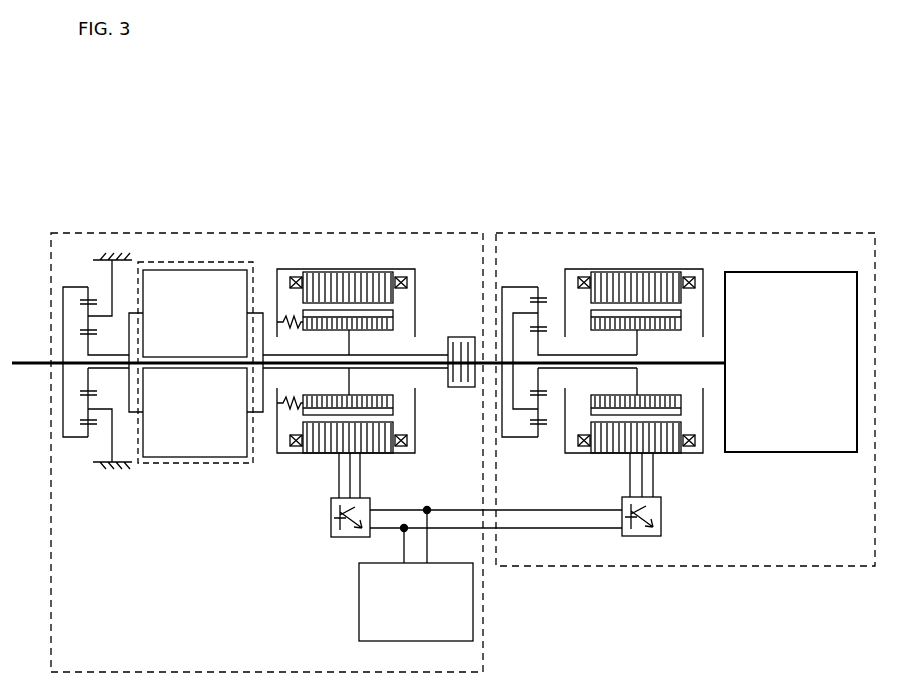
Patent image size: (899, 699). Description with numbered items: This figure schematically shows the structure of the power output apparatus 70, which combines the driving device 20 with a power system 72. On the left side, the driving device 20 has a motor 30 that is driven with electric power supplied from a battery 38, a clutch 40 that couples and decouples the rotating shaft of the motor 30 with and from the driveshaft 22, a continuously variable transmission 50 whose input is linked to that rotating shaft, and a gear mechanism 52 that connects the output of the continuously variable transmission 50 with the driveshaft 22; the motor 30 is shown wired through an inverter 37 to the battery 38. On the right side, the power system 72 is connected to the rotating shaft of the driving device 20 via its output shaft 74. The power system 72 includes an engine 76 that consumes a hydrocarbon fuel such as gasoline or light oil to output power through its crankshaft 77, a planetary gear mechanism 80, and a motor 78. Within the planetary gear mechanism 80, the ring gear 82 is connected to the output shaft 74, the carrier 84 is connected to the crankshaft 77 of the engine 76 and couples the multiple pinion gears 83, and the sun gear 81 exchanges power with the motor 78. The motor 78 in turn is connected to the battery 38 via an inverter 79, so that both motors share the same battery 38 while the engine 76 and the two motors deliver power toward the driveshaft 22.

The driving device 20 is at (267, 232).
The driveshaft 22 is at (33, 360).
The motor 30 is at (343, 269).
The inverter 37 is at (370, 503).
The battery 38 is at (359, 598).
The clutch 40 is at (457, 337).
The continuously variable transmission 50 is at (194, 260).
The gear mechanism 52 is at (84, 260).
The power output apparatus 70 is at (643, 129).
The power system 72 is at (743, 232).
The output shaft 74 is at (487, 355).
The engine 76 is at (790, 272).
The crankshaft 77 is at (715, 357).
The motor 78 is at (633, 268).
The inverter 79 is at (661, 506).
The planetary gear mechanism 80 is at (546, 249).
The sun gear 81 is at (540, 350).
The ring gear 82 is at (533, 293).
The pinion gears 83 is at (540, 424).
The carrier 84 is at (504, 438).